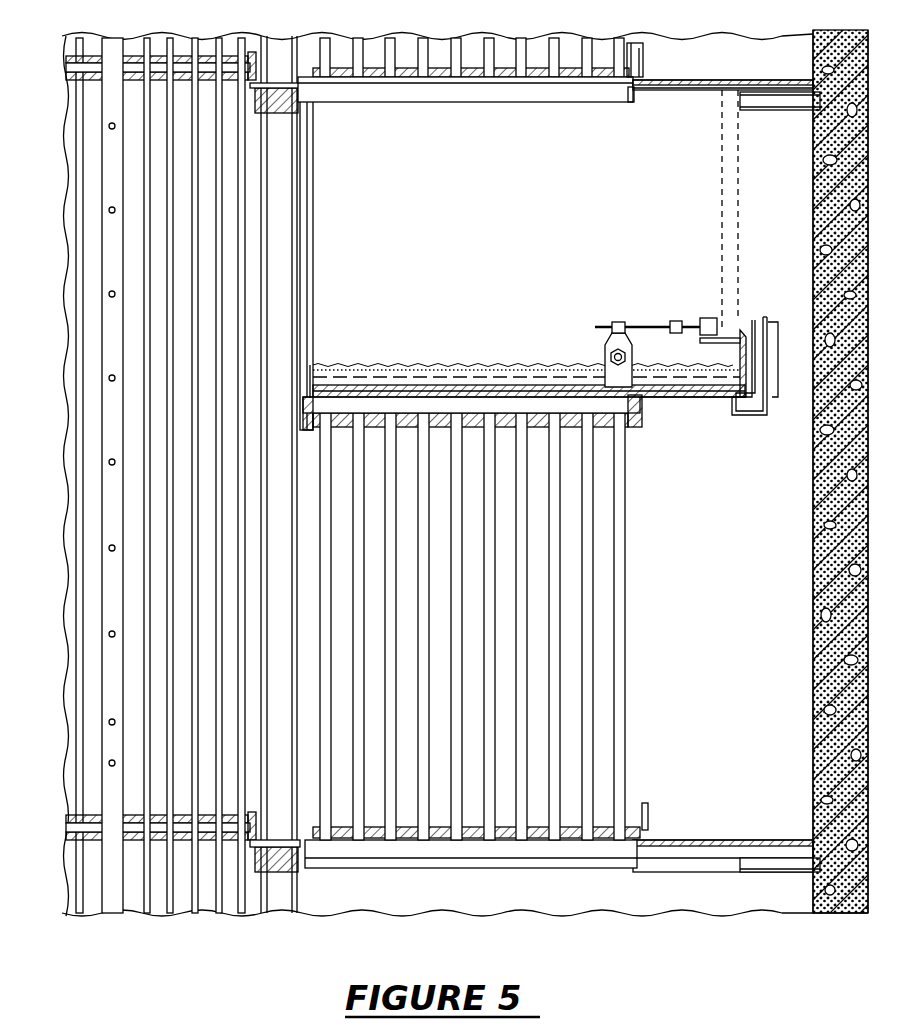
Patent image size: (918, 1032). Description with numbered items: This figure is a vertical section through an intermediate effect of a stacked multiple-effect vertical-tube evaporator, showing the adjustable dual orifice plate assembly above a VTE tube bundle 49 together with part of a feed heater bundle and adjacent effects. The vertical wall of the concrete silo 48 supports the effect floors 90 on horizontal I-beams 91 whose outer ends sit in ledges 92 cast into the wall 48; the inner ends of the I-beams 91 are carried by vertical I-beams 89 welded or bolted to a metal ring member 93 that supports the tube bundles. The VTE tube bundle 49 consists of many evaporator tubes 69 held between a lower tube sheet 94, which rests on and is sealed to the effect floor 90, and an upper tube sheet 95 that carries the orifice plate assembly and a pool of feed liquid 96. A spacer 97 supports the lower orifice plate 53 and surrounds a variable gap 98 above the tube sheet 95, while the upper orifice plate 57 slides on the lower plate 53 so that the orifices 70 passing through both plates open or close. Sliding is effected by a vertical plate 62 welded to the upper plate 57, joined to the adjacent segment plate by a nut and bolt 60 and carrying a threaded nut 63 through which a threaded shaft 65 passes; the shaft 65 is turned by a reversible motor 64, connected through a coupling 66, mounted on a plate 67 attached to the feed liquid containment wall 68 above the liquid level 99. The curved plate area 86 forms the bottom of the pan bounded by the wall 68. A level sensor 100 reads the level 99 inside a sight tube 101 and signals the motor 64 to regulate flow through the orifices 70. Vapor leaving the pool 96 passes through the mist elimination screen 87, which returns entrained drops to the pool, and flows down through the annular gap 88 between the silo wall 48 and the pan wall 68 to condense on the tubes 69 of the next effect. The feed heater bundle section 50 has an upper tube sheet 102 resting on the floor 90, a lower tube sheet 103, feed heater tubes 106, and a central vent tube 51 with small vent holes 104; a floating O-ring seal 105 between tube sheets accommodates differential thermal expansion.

The concrete silo wall 48 is at (818, 500).
The VTE tube bundle 49 is at (630, 640).
The feed heater tube bundle section 50 is at (180, 500).
The vent tube segment 51 is at (106, 326).
The lower orifice plate 53 is at (320, 372).
The upper orifice plate 57 is at (390, 390).
The nut and bolt 60 is at (605, 372).
The vertical plate 62 is at (605, 340).
The threaded nut 63 is at (620, 333).
The reversible motor 64 is at (712, 318).
The threaded shaft 65 is at (650, 327).
The coupling 66 is at (676, 321).
The motor mounting plate 67 is at (700, 340).
The feed liquid containment outer wall 68 is at (740, 330).
The evaporator tubes 69 is at (525, 527).
The orifices 70 is at (560, 378).
The curved flat plate area 86 is at (672, 385).
The mist elimination screen 87 is at (722, 155).
The vapor passage gap 88 is at (760, 364).
The vertical I-beam support 89 is at (292, 215).
The effect floor 90 is at (305, 92).
The horizontal I-beam 91 is at (800, 100).
The ledge 92 is at (822, 135).
The metal ring member 93 is at (300, 103).
The lower tube sheet 94 is at (505, 78).
The upper tube sheet 95 is at (603, 430).
The feed liquid pool 96 is at (505, 378).
The spacer 97 is at (645, 400).
The variable gap 98 is at (620, 400).
The feed liquid level 99 is at (450, 367).
The level sensor 100 is at (778, 297).
The liquid level sight tube 101 is at (757, 412).
The upper tube sheet of feed heater bundle 102 is at (135, 80).
The lower tube sheet of feed heater bundle 103 is at (135, 838).
The vent holes 104 is at (110, 213).
The floating O-ring seal 105 is at (250, 815).
The feed heater tubes 106 is at (300, 300).